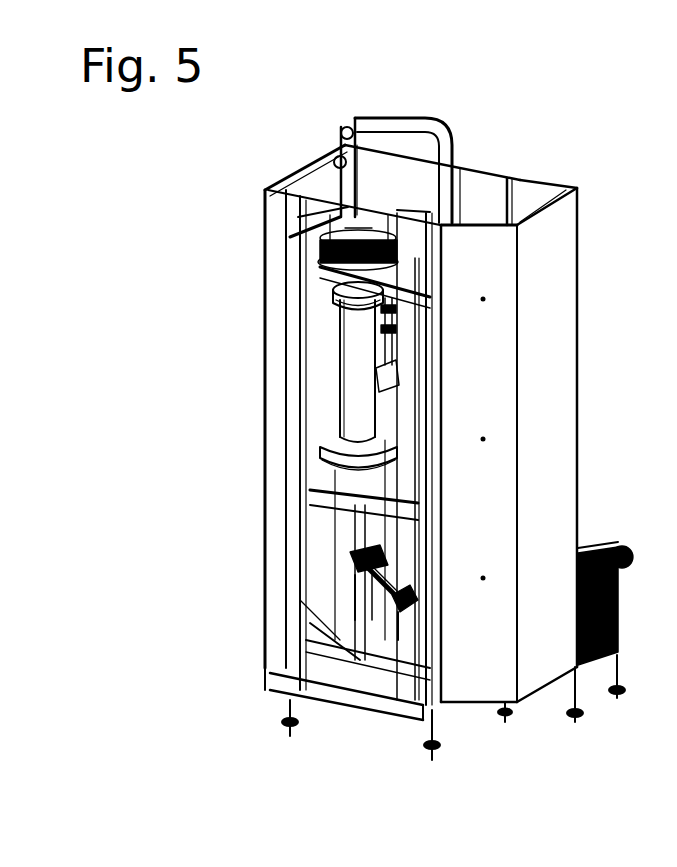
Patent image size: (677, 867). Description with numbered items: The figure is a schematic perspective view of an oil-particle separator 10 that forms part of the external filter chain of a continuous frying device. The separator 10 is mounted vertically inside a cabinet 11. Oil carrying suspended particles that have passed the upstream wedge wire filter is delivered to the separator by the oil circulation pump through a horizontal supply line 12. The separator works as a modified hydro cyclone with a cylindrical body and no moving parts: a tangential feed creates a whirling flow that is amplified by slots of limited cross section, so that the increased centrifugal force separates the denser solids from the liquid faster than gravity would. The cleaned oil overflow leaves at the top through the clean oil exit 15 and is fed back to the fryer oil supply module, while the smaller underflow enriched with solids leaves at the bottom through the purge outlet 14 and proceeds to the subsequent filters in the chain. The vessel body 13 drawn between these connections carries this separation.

The oil-particle separator 10 is at (248, 262).
The cabinet 11 is at (535, 408).
The horizontal supply line 12 is at (403, 268).
The vessel / column 13 is at (356, 377).
The purge outlet 14 is at (352, 602).
The clean oil exit 15 is at (340, 157).